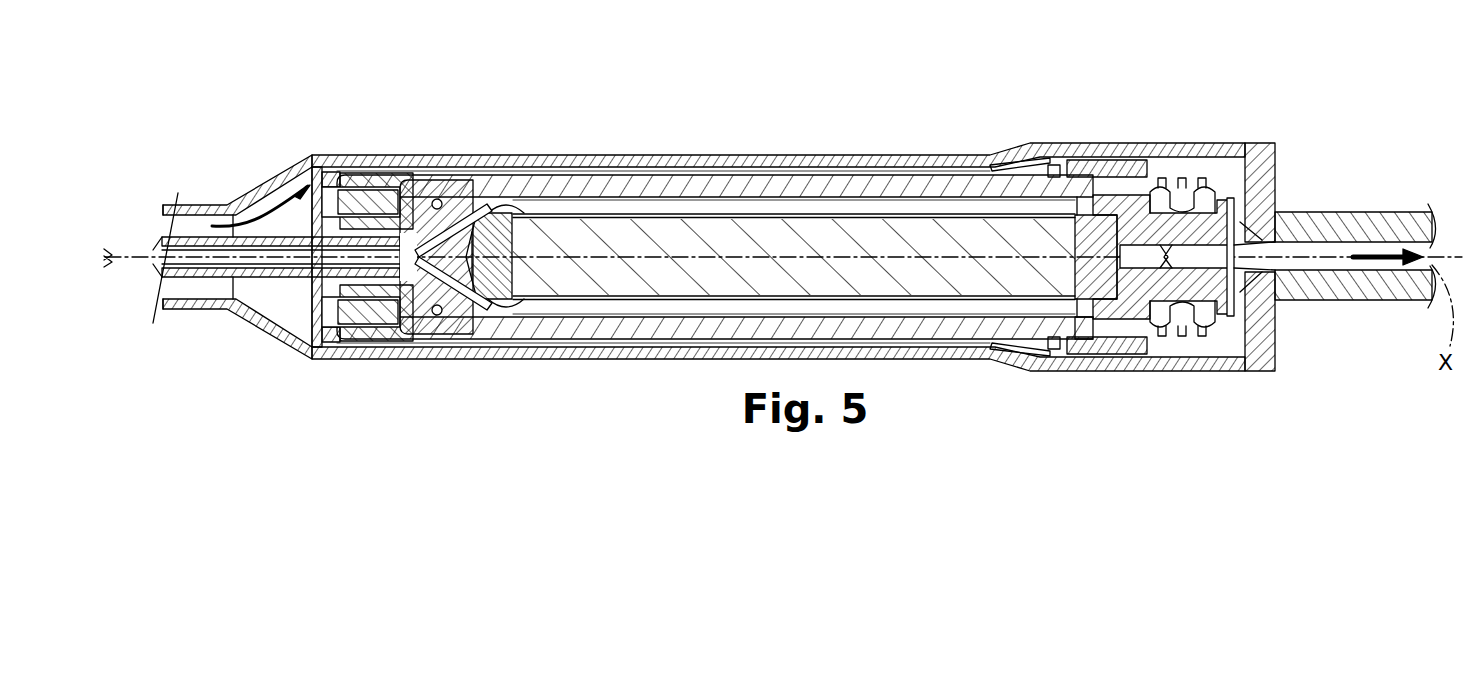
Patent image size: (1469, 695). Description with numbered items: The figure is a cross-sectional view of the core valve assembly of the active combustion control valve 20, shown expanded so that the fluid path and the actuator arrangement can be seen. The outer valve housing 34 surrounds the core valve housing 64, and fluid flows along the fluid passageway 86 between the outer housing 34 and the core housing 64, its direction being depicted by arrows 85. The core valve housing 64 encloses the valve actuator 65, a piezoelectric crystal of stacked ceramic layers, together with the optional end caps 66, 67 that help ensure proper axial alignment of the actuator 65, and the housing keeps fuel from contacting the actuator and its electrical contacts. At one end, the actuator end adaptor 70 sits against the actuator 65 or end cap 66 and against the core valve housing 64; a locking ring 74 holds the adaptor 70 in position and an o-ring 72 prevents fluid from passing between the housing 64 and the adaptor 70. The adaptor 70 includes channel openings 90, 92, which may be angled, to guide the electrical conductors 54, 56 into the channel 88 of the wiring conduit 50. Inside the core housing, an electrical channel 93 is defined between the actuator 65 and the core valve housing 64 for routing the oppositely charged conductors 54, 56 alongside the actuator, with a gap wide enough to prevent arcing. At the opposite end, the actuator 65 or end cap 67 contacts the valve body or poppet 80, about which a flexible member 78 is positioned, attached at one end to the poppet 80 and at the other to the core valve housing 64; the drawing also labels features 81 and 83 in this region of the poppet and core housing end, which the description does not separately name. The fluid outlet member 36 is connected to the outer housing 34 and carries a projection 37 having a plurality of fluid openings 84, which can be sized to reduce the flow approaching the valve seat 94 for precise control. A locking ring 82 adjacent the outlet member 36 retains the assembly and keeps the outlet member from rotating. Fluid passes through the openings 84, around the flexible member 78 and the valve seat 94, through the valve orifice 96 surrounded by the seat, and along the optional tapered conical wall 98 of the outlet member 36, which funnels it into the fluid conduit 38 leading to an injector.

The active combustion control valve 20 is at (357, 88).
The outer valve housing 34 is at (676, 176).
The fluid outlet member 36 is at (1258, 150).
The projection 37 is at (1138, 165).
The fluid conduit 38 is at (1366, 293).
The wiring conduit 50 is at (220, 279).
The electrical conductor 54 is at (157, 245).
The electrical conductor 56 is at (162, 302).
The core valve housing 64 is at (766, 190).
The valve actuator 65 is at (660, 255).
The end cap 66 is at (490, 330).
The end cap 67 is at (1082, 302).
The actuator end adaptor 70 is at (413, 176).
The o-ring 72 is at (437, 177).
The locking ring 74 is at (333, 338).
The flexible member 78 is at (1155, 322).
The poppet 80 is at (1165, 305).
The valve passage 81 is at (1122, 325).
The locking ring 82 is at (1057, 168).
The barrel end 83 is at (1092, 335).
The fluid openings 84 is at (1225, 178).
The arrows 85 is at (237, 210).
The fluid passageway 86 is at (184, 222).
The channel 88 is at (218, 307).
The channel opening 90 is at (476, 180).
The channel opening 92 is at (443, 332).
The electrical channel 93 is at (983, 206).
The valve seat 94 is at (1242, 226).
The valve orifice 96 is at (1276, 302).
The tapered conical wall 98 is at (1262, 266).